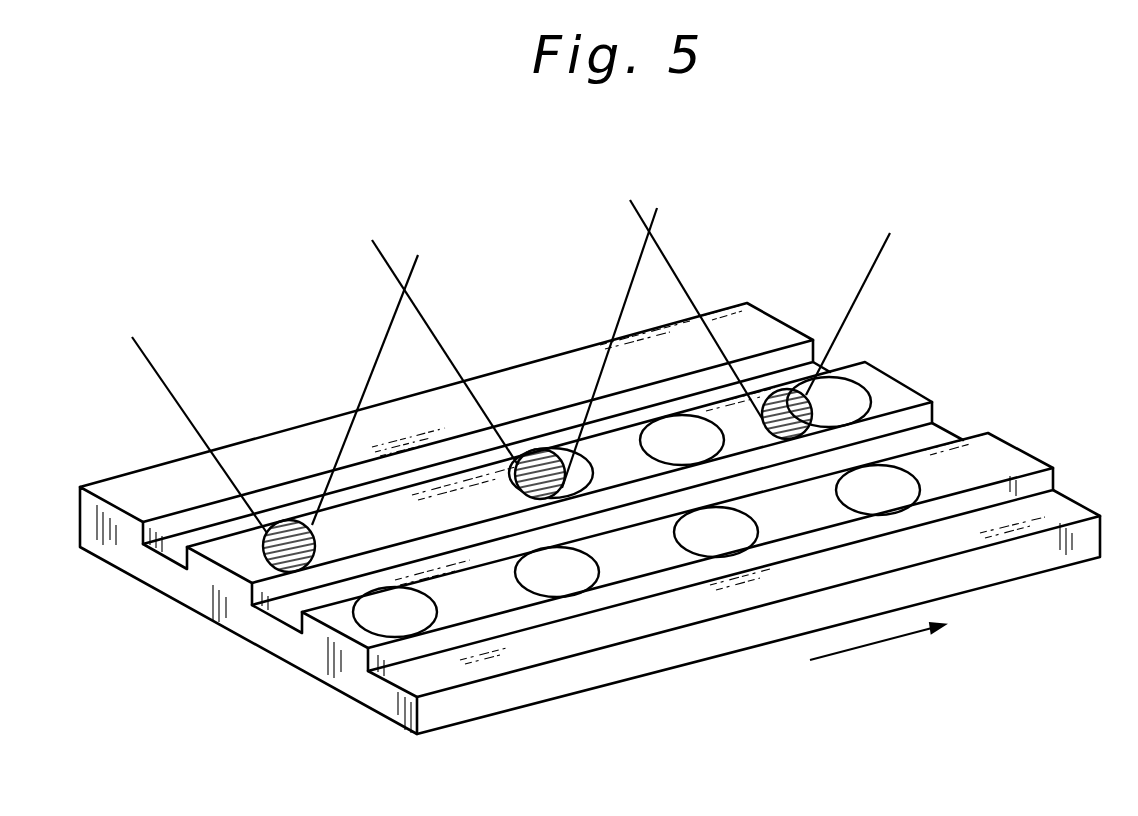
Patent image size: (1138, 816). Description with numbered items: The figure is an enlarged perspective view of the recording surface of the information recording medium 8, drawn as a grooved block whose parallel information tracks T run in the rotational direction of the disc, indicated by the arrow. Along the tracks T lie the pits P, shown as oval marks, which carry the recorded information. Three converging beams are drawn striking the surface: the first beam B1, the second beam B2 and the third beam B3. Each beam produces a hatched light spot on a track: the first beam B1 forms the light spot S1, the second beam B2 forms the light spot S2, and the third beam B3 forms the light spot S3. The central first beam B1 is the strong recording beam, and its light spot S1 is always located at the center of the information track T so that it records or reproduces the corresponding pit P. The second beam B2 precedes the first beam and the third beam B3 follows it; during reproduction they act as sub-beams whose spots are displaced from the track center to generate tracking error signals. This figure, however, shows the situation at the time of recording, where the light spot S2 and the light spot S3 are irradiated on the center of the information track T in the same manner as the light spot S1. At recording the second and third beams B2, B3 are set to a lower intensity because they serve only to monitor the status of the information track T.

The information recording medium 8 is at (590, 538).
The information track T is at (315, 638).
The pit P is at (602, 587).
The light spot S1 is at (535, 450).
The light spot S2 is at (283, 520).
The light spot S3 is at (783, 390).
The first beam B1 is at (427, 330).
The second beam B2 is at (152, 371).
The third beam B3 is at (670, 262).